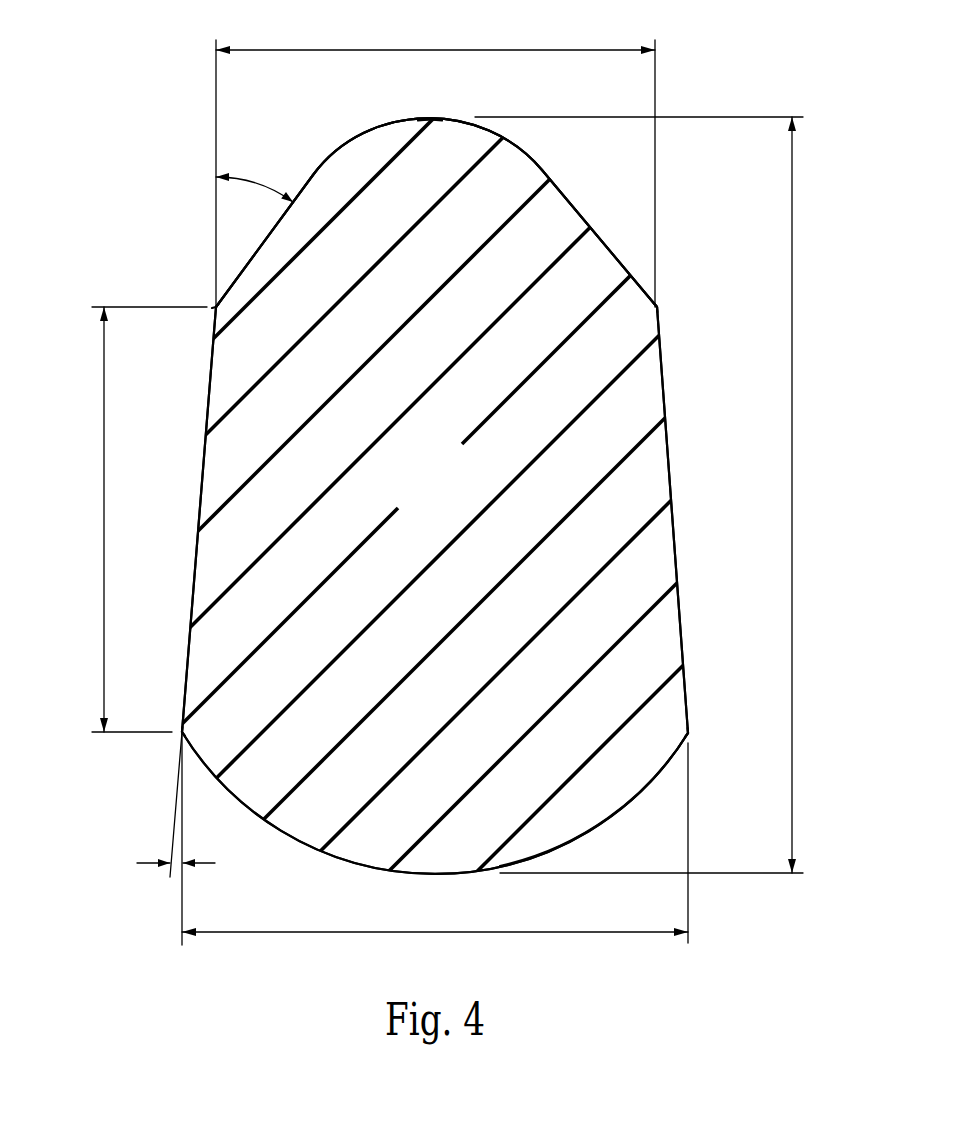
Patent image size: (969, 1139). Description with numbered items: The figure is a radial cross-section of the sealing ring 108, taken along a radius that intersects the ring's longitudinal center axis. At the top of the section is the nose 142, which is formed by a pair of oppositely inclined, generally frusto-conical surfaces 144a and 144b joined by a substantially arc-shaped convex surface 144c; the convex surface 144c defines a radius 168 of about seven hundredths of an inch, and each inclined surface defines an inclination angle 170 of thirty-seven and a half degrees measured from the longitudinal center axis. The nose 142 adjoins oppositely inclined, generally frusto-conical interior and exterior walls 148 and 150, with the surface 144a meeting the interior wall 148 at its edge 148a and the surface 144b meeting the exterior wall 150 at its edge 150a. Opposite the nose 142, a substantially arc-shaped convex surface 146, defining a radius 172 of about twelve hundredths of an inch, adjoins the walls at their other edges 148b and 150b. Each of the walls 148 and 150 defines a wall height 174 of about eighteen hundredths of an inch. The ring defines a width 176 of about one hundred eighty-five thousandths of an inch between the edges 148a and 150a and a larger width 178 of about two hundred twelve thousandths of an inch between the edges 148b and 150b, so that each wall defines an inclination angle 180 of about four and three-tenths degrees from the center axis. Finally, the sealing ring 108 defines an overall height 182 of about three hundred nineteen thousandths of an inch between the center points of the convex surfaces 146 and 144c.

The sealing ring 108 is at (457, 481).
The nose 142 is at (350, 144).
The inclined surface 144a is at (252, 258).
The inclined surface 144b is at (598, 183).
The arc-shaped convex surface 144c is at (397, 116).
The convex surface 146 is at (343, 863).
The interior wall 148 is at (200, 470).
The edge 148a is at (213, 304).
The edge 148b is at (181, 735).
The exterior wall 150 is at (666, 393).
The edge 150a is at (661, 305).
The edge 150b is at (693, 736).
The radius 168 is at (452, 118).
The inclination angle 170 is at (265, 178).
The radius 172 is at (622, 813).
The wall height 174 is at (103, 520).
The width 176 is at (442, 49).
The width 178 is at (436, 935).
The inclination angle 180 is at (143, 862).
The overall height 182 is at (795, 497).